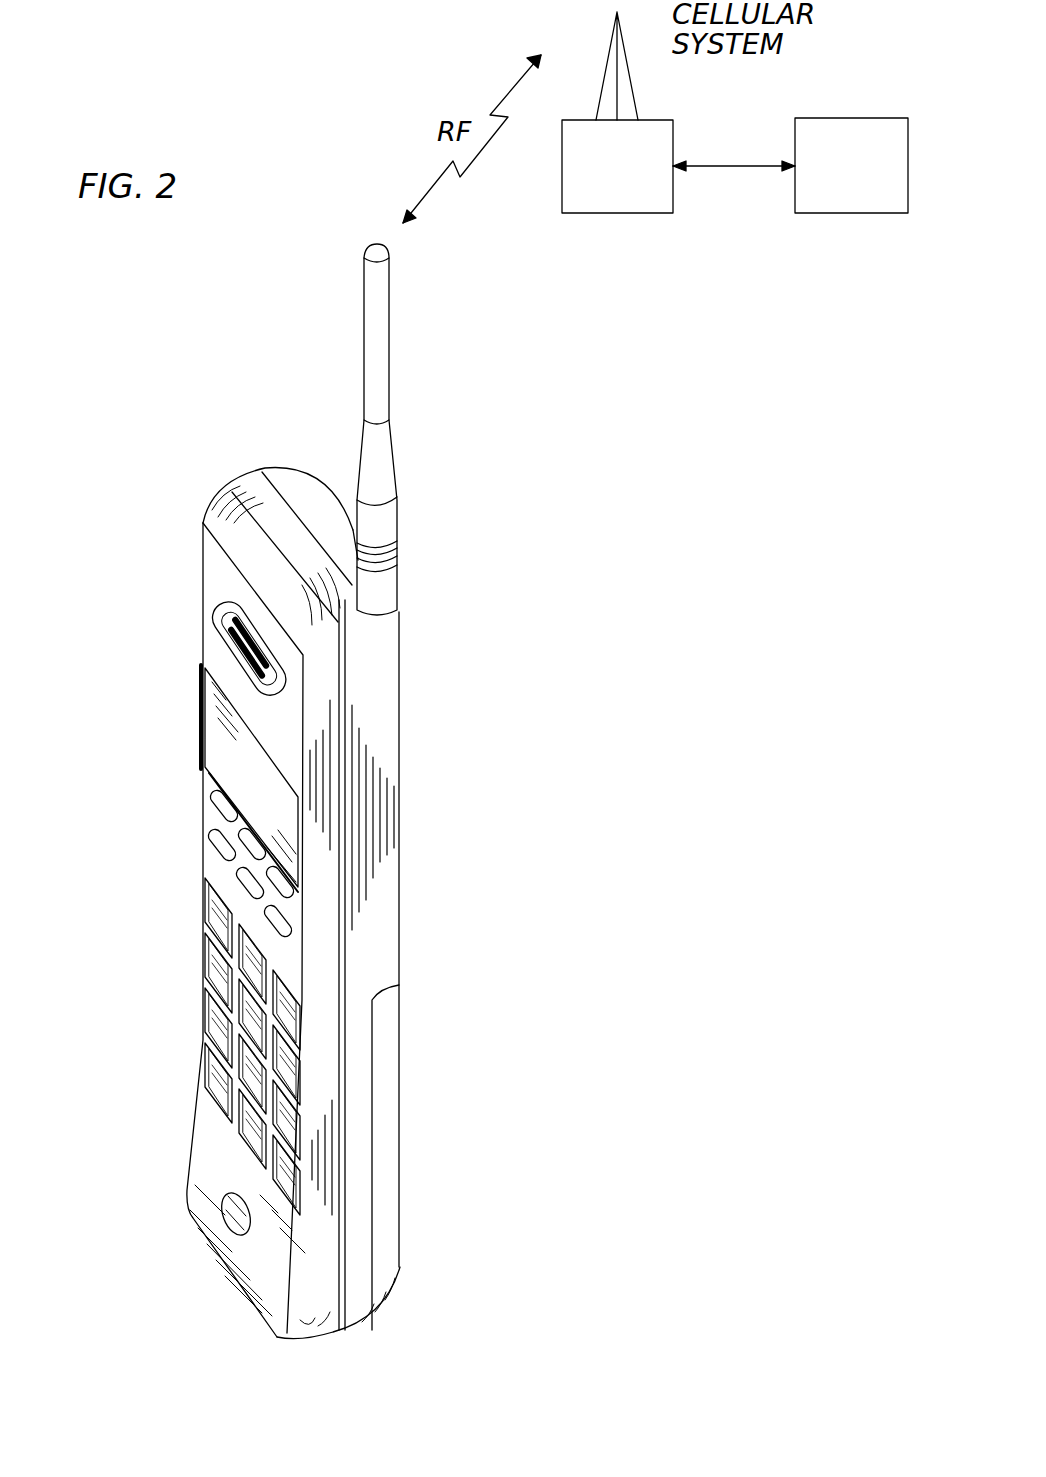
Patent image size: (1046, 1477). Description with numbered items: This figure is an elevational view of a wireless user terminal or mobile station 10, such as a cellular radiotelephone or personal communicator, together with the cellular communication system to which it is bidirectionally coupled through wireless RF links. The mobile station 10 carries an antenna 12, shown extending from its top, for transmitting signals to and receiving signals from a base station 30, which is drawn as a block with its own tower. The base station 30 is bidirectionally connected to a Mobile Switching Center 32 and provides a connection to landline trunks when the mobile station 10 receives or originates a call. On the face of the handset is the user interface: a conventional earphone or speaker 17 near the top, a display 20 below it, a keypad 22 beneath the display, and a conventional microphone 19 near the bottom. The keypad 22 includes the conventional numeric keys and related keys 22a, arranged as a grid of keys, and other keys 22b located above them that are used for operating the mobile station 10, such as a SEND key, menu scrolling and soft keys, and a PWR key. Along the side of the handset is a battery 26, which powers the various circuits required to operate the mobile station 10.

The mobile station 10 is at (127, 509).
The antenna 12 is at (375, 363).
The speaker 17 is at (235, 630).
The microphone 19 is at (232, 1218).
The display 20 is at (228, 750).
The keypad 22 is at (271, 1001).
The numeric and related keys 22a is at (210, 1010).
The other keys 22b is at (208, 862).
The battery 26 is at (384, 1168).
The base station 30 is at (605, 213).
The Mobile Switching Center 32 is at (848, 118).